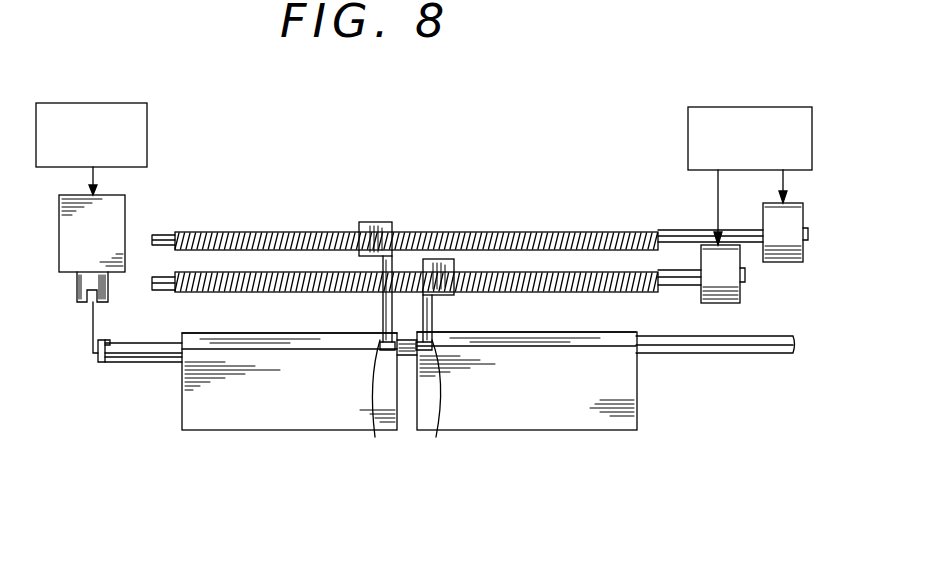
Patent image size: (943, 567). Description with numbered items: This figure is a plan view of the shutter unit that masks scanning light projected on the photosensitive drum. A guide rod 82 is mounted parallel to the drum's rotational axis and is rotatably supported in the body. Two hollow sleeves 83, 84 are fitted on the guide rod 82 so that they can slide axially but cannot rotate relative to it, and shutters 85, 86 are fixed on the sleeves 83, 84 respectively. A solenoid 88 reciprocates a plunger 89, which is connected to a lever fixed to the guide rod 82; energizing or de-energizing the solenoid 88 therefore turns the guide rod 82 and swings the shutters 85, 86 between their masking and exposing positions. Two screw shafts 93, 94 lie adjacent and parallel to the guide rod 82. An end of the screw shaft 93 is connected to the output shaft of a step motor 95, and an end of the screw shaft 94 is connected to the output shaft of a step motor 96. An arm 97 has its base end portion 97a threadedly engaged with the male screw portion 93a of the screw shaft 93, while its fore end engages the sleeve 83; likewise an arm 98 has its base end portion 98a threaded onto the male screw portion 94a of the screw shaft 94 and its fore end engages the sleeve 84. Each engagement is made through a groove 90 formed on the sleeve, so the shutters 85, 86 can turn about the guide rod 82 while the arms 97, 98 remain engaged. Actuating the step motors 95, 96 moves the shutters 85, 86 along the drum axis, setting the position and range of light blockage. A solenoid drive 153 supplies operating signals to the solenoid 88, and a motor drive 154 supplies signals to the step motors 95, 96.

The solenoid drive 153 is at (86, 103).
The motor drive 154 is at (746, 107).
The guide rod 82 is at (141, 360).
The hollow sleeve 83 is at (266, 342).
The hollow sleeve 84 is at (573, 336).
The shutter 85 is at (302, 424).
The shutter 86 is at (517, 415).
The solenoid 88 is at (68, 262).
The plunger 89 is at (108, 290).
The groove 90 is at (405, 404).
The screw shaft 93 is at (457, 216).
The male screw portion 93a is at (220, 232).
The screw shaft 94 is at (426, 238).
The male screw portion 94a is at (295, 272).
The step motor 95 is at (785, 258).
The step motor 96 is at (730, 298).
The arm 97 is at (363, 267).
The base end portion 97a is at (372, 222).
The arm 98 is at (452, 267).
The base end portion 98a is at (437, 259).